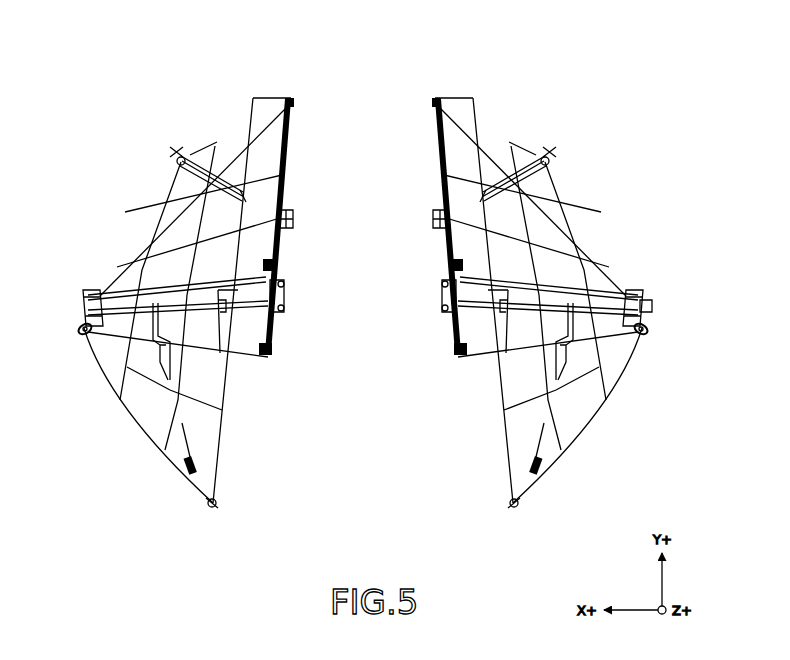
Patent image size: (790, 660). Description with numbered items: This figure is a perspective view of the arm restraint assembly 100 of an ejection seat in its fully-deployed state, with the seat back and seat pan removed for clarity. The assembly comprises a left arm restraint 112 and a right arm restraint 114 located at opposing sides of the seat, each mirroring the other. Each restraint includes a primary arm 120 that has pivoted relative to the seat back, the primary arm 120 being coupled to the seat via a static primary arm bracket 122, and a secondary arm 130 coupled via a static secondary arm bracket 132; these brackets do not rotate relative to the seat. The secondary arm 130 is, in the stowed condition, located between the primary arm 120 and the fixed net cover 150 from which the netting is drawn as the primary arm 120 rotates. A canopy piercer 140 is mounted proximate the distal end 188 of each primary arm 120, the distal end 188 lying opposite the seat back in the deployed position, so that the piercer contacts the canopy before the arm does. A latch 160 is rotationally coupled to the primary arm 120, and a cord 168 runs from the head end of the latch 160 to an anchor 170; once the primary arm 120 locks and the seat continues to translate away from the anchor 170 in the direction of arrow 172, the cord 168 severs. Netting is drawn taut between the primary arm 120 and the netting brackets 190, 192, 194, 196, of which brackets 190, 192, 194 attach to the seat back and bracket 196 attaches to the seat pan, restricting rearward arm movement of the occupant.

The arm restraint assembly 100 is at (152, 72).
The left arm restraint 112 is at (626, 153).
The right arm restraint 114 is at (98, 158).
The primary arm 120 is at (78, 332).
The primary arm bracket 122 is at (440, 297).
The secondary arm 130 is at (177, 160).
The secondary arm bracket 132 is at (433, 219).
The canopy piercer 140 is at (80, 294).
The fixed net cover 150 is at (458, 157).
The latch 160 is at (177, 360).
The cord 168 is at (188, 440).
The anchor 170 is at (198, 474).
The arrow 172 is at (363, 412).
The distal end 188 is at (652, 305).
The netting bracket 190 is at (428, 105).
The netting bracket 192 is at (448, 266).
The netting bracket 194 is at (448, 355).
The netting bracket 196 is at (222, 508).